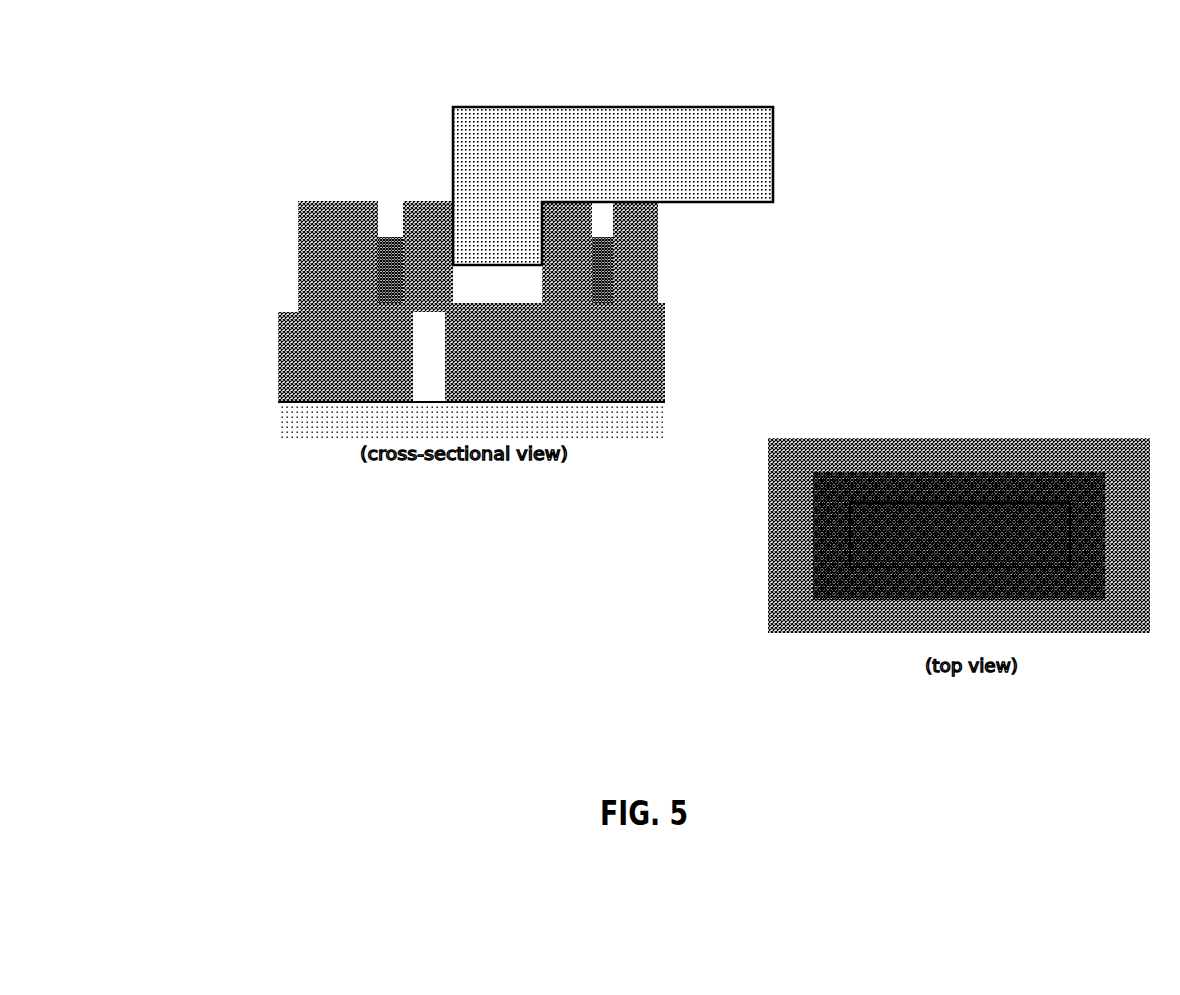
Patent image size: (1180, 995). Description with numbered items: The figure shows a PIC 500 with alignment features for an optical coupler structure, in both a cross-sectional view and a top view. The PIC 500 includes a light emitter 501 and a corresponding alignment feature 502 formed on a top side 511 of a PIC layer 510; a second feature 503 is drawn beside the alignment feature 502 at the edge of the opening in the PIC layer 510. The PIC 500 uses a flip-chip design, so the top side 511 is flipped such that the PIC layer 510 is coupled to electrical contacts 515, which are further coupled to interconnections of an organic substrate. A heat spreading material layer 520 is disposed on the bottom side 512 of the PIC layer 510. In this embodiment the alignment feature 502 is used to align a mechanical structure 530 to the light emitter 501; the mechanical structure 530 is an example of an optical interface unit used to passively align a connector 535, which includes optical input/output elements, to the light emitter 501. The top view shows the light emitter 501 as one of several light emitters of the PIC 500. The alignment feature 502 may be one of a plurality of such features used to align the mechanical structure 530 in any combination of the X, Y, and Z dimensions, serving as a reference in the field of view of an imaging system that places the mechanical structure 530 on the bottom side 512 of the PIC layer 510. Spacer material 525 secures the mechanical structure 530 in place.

The PIC 500 is at (890, 299).
The light emitter 501 is at (493, 403).
The alignment feature 502 is at (437, 399).
The sidewall of opening 503 is at (423, 386).
The PIC layer 510 is at (280, 353).
The top side 511 is at (682, 403).
The bottom side 512 is at (682, 313).
The electrical contacts 515 is at (278, 419).
The heat spreading material layer 520 is at (305, 255).
The spacer material 525 is at (385, 237).
The mechanical structure 530 is at (431, 201).
The connector 535 is at (562, 132).